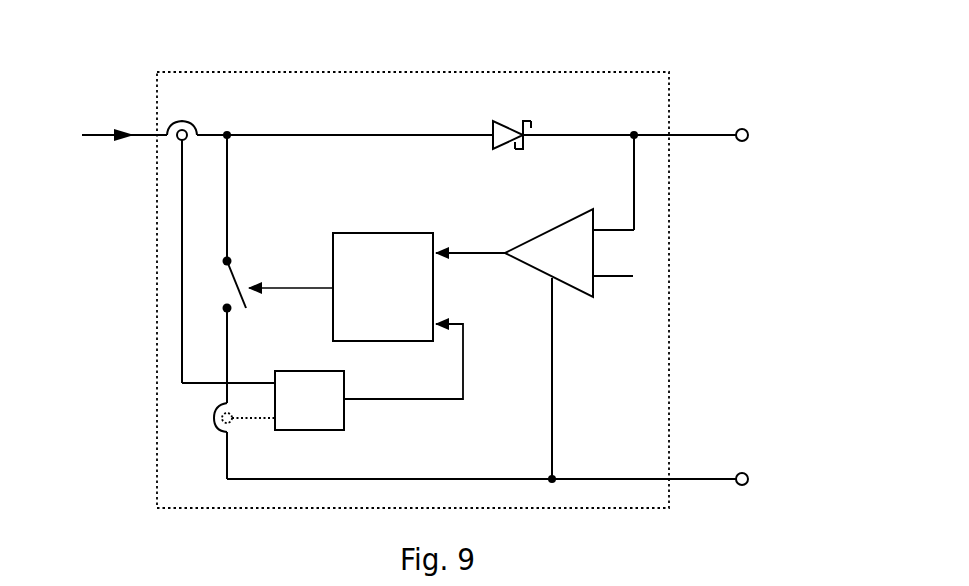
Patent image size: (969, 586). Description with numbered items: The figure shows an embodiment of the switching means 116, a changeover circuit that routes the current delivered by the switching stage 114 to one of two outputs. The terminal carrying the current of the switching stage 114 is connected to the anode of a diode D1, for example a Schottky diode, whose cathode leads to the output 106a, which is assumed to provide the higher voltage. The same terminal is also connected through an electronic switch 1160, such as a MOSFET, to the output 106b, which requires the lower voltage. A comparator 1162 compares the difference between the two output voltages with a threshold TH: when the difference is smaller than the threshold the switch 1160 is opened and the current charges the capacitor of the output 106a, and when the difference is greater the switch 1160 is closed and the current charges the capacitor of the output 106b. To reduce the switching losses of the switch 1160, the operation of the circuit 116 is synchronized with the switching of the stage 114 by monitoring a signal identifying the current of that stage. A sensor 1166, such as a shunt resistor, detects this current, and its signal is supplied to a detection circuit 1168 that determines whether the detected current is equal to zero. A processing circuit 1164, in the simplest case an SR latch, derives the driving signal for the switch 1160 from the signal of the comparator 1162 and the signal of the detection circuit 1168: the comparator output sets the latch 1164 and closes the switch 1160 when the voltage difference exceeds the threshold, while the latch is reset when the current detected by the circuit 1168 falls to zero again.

The switching means 116 is at (211, 68).
The switching stage 114 is at (124, 116).
The current sensor 1166 is at (171, 143).
The electronic switch 1160 is at (212, 302).
The comparator 1162 is at (549, 225).
The processing circuit 1164 is at (366, 231).
The detection circuit 1168 is at (293, 369).
The output 106a is at (742, 113).
The output 106b is at (742, 457).
The diode D1 is at (506, 117).